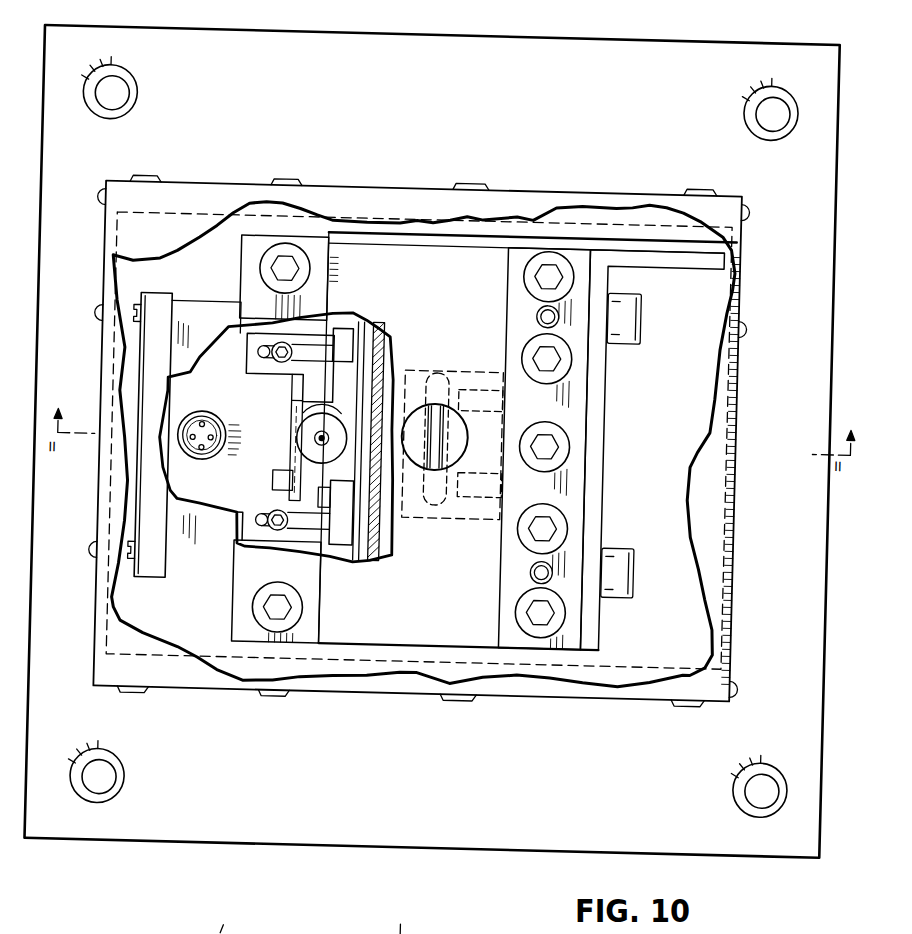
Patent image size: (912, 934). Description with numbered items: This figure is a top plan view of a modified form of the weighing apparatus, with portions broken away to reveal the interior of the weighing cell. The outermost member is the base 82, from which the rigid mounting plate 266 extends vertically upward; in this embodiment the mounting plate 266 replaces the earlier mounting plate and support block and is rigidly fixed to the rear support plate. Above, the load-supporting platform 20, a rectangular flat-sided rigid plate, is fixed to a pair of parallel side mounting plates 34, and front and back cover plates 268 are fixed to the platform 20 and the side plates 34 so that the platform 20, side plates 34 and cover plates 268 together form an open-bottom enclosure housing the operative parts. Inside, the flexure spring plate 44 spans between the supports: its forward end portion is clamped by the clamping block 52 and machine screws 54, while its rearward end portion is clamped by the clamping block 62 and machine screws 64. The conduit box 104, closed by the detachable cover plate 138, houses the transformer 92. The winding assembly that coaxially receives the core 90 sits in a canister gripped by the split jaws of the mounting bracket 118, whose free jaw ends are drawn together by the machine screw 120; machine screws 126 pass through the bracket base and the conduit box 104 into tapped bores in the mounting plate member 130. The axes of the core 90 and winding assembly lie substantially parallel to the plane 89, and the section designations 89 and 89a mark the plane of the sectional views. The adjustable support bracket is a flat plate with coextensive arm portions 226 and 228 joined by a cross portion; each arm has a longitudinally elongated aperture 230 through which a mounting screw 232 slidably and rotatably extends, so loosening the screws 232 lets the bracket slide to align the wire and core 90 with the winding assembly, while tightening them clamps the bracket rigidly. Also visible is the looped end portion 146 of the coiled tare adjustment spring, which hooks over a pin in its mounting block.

The base 82 is at (487, 34).
The load-supporting platform 20 is at (436, 178).
The front and back cover plates 268 is at (119, 260).
The side mounting plates 34 is at (672, 229).
The rigid mounting plate 266 is at (620, 403).
The flexure spring plate 44 is at (426, 627).
The clamping block 62 is at (597, 613).
The machine screws 64 is at (533, 340).
The clamping block 52 is at (333, 251).
The machine screws 54 is at (268, 260).
The cover plate 138 is at (167, 294).
The conduit box 104 is at (218, 300).
The arm portion 226 is at (256, 367).
The arm portion 228 is at (255, 494).
The mounting screws 232 is at (280, 342).
The elongated apertures 230 is at (272, 352).
The mounting bracket 118 is at (302, 419).
The machine screw 120 is at (287, 466).
The core 90 is at (335, 425).
The transformer 92 is at (323, 403).
The machine screws 126 is at (338, 339).
The mounting plate member 130 is at (407, 496).
The looped end portion 146 is at (446, 407).
The plane 89 is at (243, 928).
The section line 89a is at (423, 924).